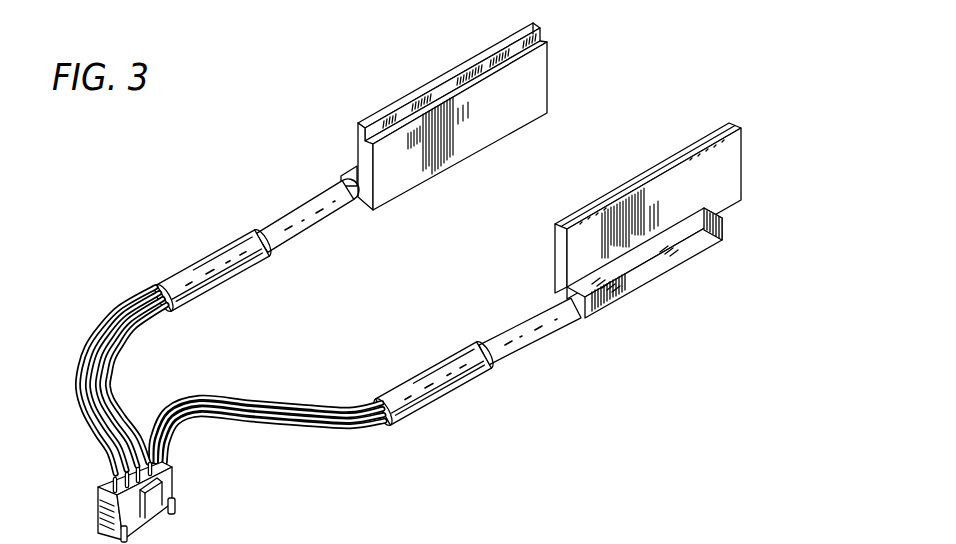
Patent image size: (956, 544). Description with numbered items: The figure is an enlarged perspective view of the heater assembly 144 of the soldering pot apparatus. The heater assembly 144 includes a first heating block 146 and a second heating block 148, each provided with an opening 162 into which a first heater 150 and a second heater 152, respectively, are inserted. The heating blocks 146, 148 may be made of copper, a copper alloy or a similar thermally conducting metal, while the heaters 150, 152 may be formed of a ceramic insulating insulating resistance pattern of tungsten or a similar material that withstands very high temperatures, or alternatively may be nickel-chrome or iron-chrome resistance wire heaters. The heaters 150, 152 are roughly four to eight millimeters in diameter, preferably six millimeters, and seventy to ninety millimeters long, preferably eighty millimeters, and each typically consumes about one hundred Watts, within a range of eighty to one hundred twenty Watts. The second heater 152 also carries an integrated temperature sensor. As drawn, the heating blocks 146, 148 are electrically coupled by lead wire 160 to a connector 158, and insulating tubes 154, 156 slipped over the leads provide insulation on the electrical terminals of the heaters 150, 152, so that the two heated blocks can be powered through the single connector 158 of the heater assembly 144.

The heater assembly 144 is at (449, 452).
The first heating block 146 is at (548, 78).
The second heating block 148 is at (741, 126).
The first heater 150 is at (305, 208).
The second heater 152 is at (535, 341).
The insulating tube 154 is at (204, 258).
The insulating tube 156 is at (428, 371).
The connector 158 is at (172, 469).
The lead wire 160 is at (135, 392).
The opening 162 is at (353, 222).